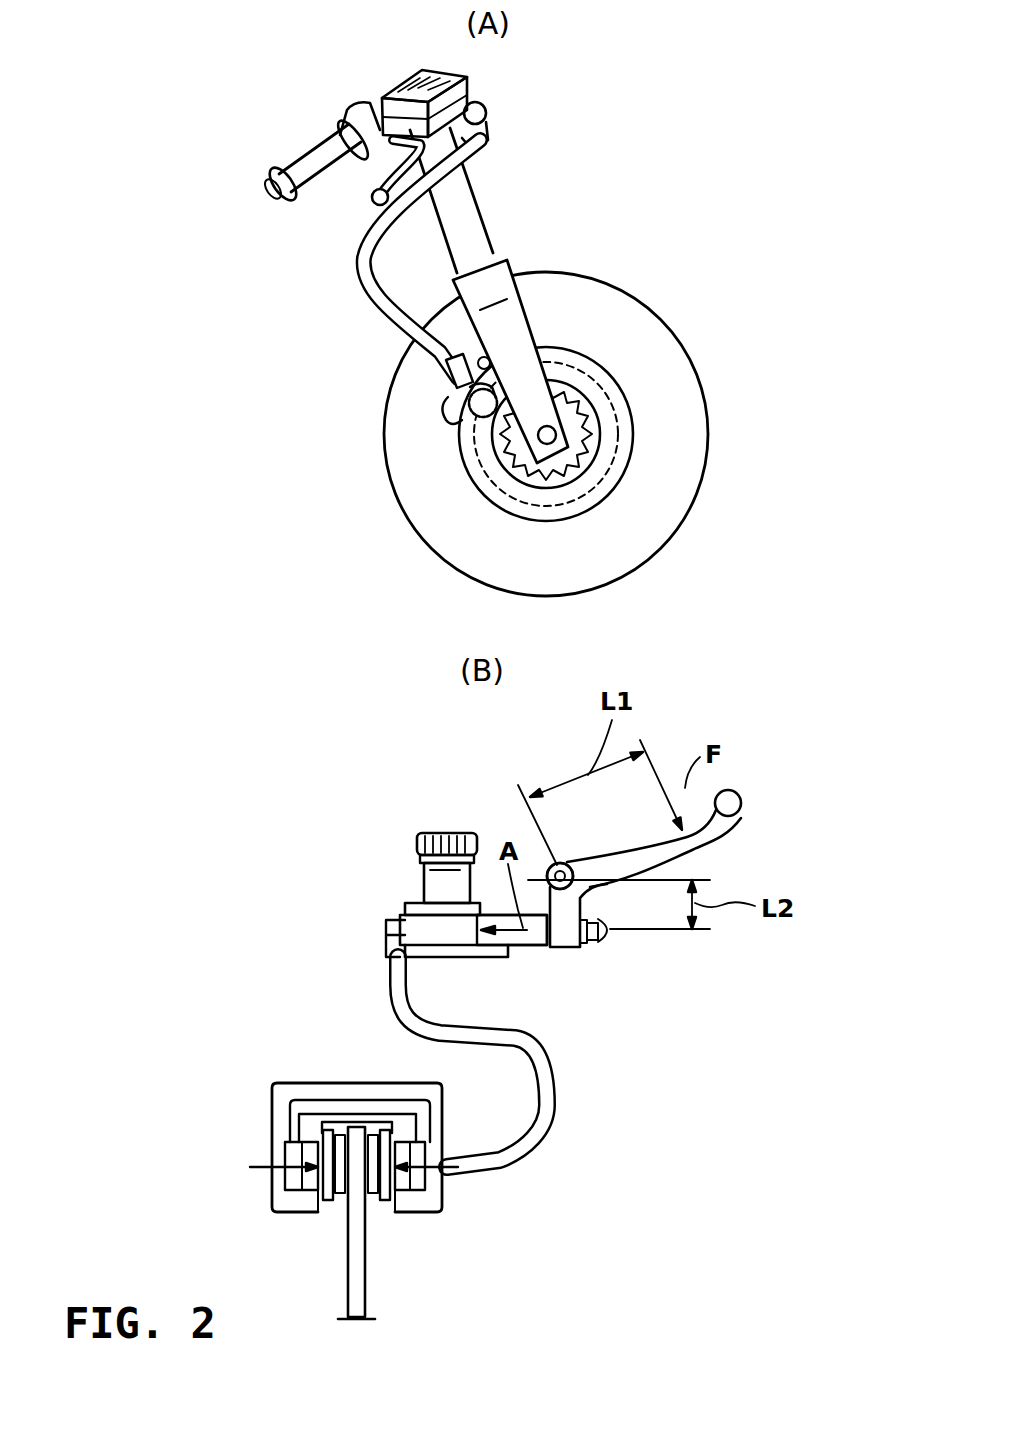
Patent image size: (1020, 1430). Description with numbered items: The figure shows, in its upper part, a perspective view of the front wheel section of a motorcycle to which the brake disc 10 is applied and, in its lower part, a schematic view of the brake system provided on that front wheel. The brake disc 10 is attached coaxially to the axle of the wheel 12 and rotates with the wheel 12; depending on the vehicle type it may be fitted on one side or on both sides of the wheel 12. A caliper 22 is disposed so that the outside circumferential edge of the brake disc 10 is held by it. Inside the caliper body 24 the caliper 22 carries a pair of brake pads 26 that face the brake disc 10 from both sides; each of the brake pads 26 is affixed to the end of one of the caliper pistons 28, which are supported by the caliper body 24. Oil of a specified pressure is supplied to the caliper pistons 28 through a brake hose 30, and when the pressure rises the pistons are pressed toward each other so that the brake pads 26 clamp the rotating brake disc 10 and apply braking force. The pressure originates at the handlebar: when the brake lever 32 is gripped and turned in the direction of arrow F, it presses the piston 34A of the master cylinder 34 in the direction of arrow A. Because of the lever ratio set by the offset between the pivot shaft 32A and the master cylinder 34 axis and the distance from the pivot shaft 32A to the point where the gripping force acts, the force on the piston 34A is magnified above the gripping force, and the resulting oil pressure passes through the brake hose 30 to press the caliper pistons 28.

The brake disc 10 is at (646, 423).
The wheel 12 is at (655, 330).
The caliper 22 is at (438, 421).
The caliper body 24 is at (380, 1090).
The brake pads 26 is at (382, 1137).
The caliper pistons 28 is at (405, 1180).
The brake hose 30 is at (370, 288).
The brake lever 32 is at (378, 168).
The pivot shaft 32A is at (567, 864).
The master cylinder 34 is at (482, 962).
The piston 34A is at (527, 940).